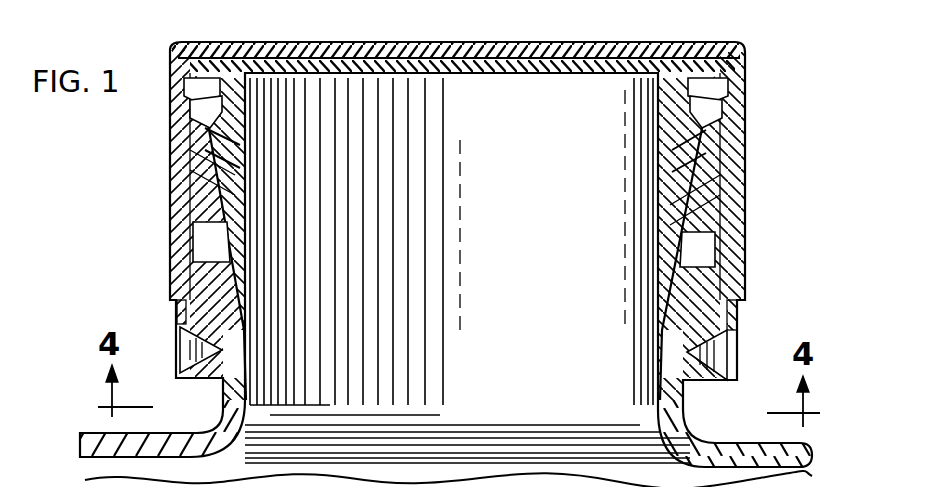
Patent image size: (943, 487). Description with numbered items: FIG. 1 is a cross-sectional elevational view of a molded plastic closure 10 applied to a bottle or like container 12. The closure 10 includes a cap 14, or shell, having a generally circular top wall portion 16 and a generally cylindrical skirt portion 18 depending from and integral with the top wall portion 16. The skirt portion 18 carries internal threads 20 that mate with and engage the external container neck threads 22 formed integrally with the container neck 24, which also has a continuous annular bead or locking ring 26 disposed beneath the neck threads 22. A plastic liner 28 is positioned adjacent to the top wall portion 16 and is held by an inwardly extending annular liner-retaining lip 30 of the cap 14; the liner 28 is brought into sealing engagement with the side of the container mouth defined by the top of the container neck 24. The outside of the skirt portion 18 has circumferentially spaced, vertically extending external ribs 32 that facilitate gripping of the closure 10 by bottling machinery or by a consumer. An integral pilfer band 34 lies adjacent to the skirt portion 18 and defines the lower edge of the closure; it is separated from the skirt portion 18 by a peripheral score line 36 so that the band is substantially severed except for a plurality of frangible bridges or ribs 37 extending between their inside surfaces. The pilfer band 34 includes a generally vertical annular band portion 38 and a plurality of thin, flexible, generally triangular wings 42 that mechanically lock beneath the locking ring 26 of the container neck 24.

The closure 10 is at (762, 101).
The container 12 is at (702, 436).
The cap 14 is at (749, 163).
The top wall portion 16 is at (627, 62).
The skirt portion 18 is at (182, 191).
The internal threads 20 is at (214, 134).
The container neck threads 22 is at (208, 176).
The container neck 24 is at (252, 366).
The locking ring 26 is at (232, 300).
The plastic liner 28 is at (520, 70).
The liner-retaining lip 30 is at (171, 90).
The external ribs 32 is at (176, 253).
The pilfer band 34 is at (178, 366).
The score line 36 is at (178, 312).
The frangible ribs 37 is at (178, 292).
The annular band portion 38 is at (738, 348).
The wings 42 is at (196, 376).